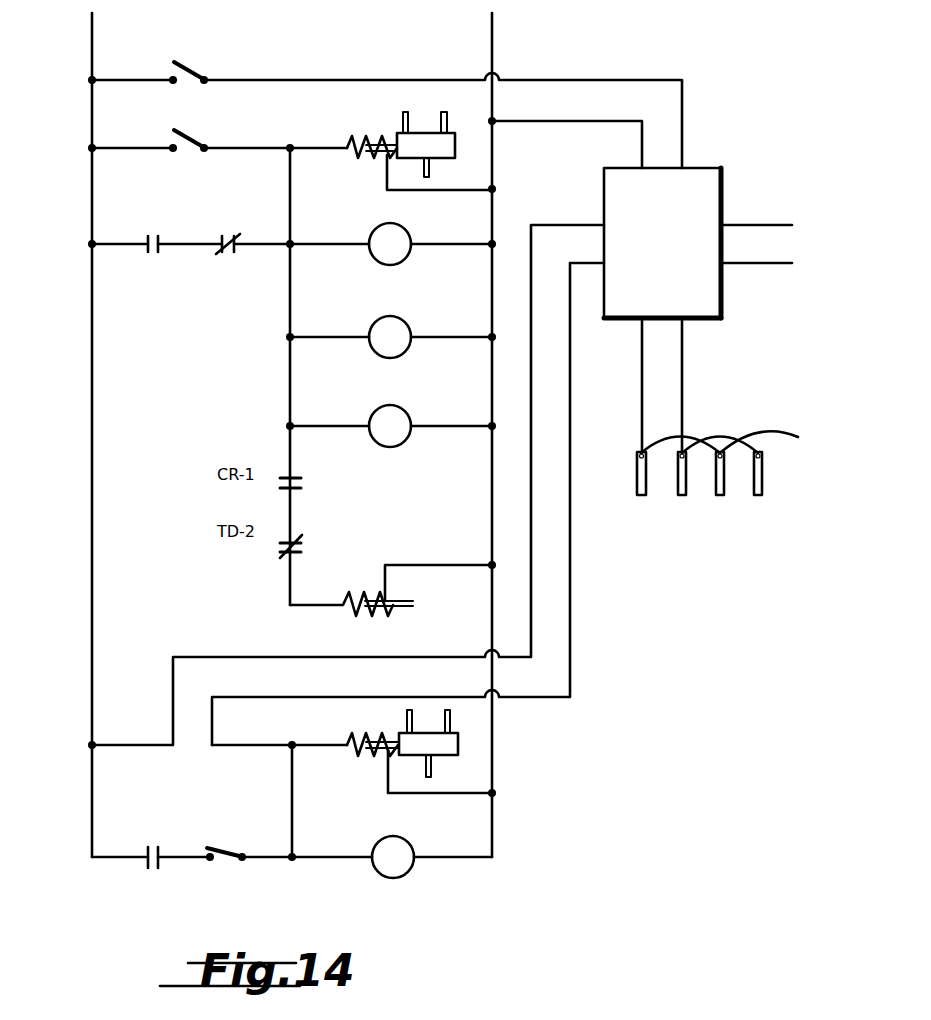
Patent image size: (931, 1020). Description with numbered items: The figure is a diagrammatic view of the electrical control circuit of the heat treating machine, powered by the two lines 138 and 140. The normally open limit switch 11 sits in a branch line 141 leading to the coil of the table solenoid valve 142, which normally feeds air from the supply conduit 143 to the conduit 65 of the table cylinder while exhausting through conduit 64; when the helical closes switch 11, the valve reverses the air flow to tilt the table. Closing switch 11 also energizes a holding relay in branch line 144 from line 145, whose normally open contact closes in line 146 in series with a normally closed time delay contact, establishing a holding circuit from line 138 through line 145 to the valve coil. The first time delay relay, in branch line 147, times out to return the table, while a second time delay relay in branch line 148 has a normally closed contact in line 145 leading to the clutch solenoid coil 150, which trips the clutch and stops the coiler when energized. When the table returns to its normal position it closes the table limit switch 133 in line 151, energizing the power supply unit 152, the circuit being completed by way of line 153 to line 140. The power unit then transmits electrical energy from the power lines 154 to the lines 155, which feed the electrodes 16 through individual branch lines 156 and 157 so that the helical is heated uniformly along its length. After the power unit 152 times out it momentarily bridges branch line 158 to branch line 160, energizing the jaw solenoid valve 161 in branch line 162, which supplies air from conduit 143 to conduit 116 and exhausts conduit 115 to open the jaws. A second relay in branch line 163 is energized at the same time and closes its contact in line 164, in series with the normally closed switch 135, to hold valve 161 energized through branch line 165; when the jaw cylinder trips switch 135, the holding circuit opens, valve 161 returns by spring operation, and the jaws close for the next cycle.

The limit switch 11 is at (191, 139).
The electrodes 16 is at (637, 480).
The conduit 64 is at (449, 119).
The conduit 65 is at (401, 118).
The conduit 115 is at (407, 718).
The conduit 116 is at (450, 721).
The table limit switch 133 is at (189, 62).
The switch 135 is at (222, 853).
The line 138 is at (92, 42).
The line 140 is at (492, 34).
The branch line 141 is at (288, 146).
The table solenoid valve 142 is at (425, 138).
The conduit 143 is at (431, 170).
The branch line 144 is at (334, 242).
The line 145 is at (290, 178).
The line 146 is at (188, 242).
The branch line 147 is at (320, 336).
The branch line 148 is at (330, 425).
The coil of clutch solenoid 150 is at (350, 600).
The line 151 is at (312, 80).
The power supply unit 152 is at (695, 178).
The line 153 is at (598, 122).
The power lines 154 is at (762, 224).
The lines 155 is at (642, 362).
The branch line 156 is at (665, 437).
The branch line 157 is at (718, 437).
The branch line 158 is at (552, 545).
The branch line 160 is at (570, 552).
The solenoid valve 161 is at (458, 745).
The branch line 162 is at (262, 746).
The branch line 163 is at (470, 858).
The line 164 is at (128, 858).
The branch line 165 is at (292, 795).